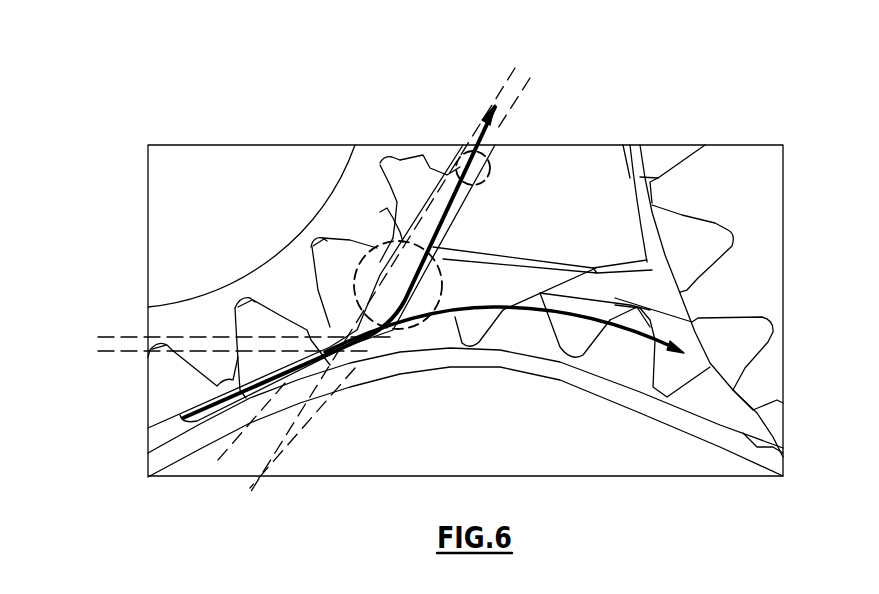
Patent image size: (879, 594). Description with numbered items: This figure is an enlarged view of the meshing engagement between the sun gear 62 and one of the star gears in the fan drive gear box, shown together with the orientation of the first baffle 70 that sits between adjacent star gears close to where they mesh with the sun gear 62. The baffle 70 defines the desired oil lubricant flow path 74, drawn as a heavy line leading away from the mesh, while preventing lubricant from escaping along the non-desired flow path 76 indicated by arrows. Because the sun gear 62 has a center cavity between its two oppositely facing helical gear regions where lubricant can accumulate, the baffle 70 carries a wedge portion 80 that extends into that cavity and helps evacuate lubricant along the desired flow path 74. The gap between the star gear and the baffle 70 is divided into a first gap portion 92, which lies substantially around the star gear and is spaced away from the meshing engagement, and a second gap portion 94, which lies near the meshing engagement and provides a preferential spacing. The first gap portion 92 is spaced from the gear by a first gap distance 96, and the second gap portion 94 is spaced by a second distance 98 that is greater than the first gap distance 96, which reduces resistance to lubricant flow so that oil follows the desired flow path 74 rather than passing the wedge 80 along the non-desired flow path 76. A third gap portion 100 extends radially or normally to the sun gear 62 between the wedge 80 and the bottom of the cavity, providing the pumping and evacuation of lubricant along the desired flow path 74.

The sun gear 62 is at (415, 432).
The first baffle 70 is at (548, 182).
The desired oil lubricant flow path 74 is at (420, 268).
The non-desired flow path 76 is at (577, 314).
The wedge portion 80 is at (462, 292).
The first gap portion 92 is at (460, 170).
The second gap portion 94 is at (353, 277).
The first gap distance 96 is at (557, 107).
The second distance 98 is at (175, 427).
The third gap portion 100 is at (103, 297).